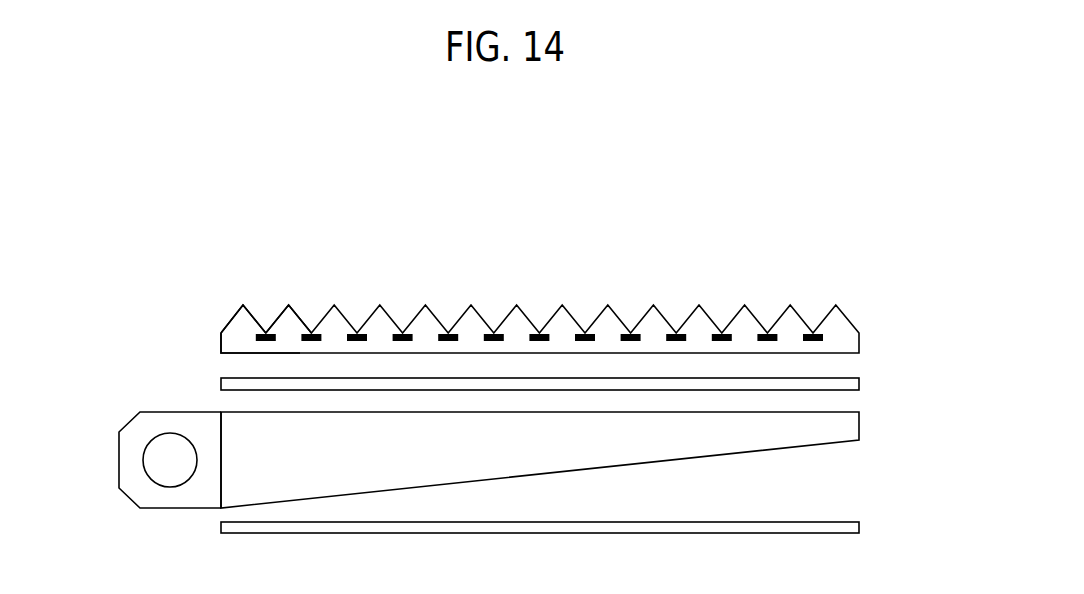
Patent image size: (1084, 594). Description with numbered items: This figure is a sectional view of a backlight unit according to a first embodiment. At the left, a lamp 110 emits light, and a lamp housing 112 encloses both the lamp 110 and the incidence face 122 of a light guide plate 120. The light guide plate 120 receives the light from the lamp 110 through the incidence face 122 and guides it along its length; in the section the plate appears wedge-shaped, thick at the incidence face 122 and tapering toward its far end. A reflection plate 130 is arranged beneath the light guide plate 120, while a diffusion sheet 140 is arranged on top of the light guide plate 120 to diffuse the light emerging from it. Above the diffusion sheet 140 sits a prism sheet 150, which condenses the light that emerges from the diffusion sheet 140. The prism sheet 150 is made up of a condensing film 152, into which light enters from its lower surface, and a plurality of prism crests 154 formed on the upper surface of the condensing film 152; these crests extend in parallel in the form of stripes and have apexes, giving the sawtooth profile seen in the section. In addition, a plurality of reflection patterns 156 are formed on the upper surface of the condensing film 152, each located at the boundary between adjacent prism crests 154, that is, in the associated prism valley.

The lamp 110 is at (170, 438).
The lamp housing 112 is at (119, 460).
The light guide plate 120 is at (850, 421).
The incidence face 122 is at (219, 462).
The reflection plate 130 is at (850, 524).
The diffusion sheet 140 is at (850, 381).
The prism sheet 150 is at (853, 343).
The condensing film 152 is at (236, 345).
The prism crests 154 is at (289, 320).
The reflection patterns 156 is at (265, 334).